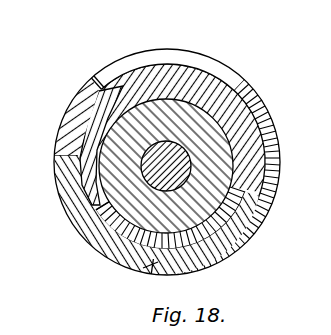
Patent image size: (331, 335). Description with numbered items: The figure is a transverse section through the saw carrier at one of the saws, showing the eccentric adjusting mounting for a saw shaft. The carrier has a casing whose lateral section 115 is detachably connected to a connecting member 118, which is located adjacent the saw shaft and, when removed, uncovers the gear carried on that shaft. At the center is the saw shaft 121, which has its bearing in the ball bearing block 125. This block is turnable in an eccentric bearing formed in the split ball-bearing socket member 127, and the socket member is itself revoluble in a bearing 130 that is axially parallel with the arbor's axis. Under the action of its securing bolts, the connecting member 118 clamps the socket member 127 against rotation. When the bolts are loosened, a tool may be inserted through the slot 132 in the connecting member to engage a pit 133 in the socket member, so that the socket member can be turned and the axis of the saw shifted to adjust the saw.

The lateral section 115 is at (80, 176).
The connecting member 118 is at (240, 142).
The shaft 121 is at (175, 174).
The ball bearing block 125 is at (98, 206).
The split ball-bearing socket member 127 is at (232, 109).
The bearing 130 is at (153, 266).
The slot 132 is at (200, 65).
The pit 133 is at (167, 50).